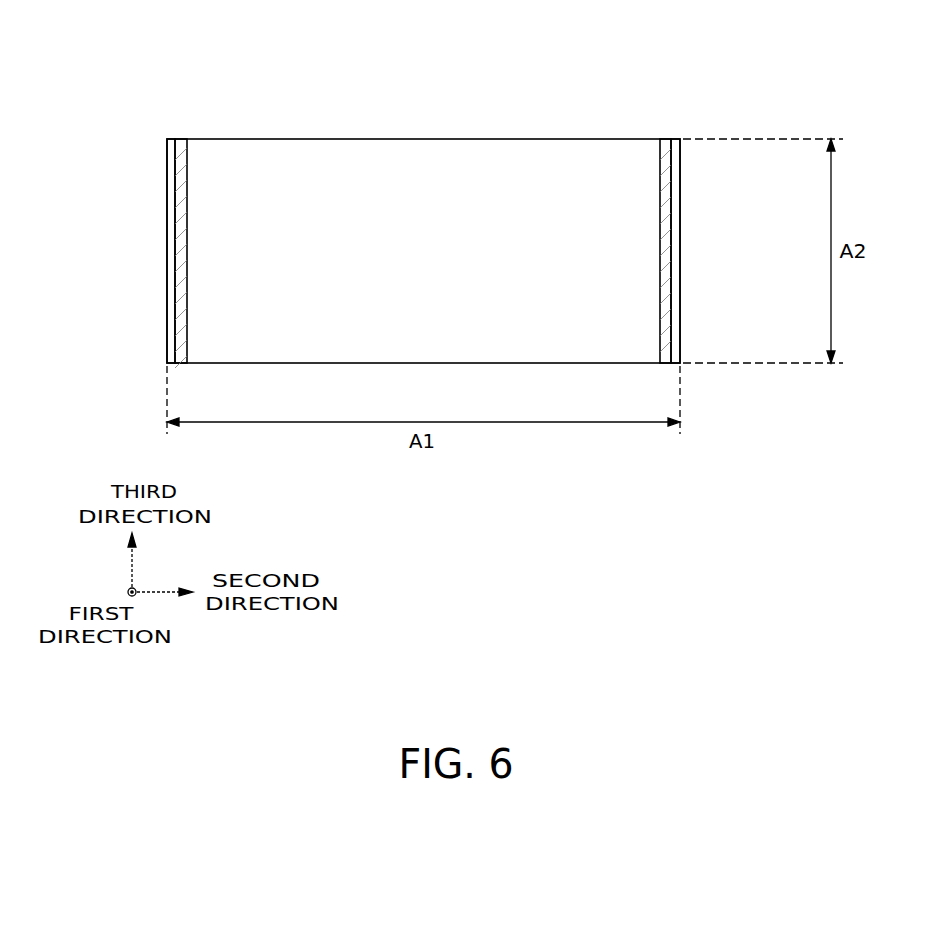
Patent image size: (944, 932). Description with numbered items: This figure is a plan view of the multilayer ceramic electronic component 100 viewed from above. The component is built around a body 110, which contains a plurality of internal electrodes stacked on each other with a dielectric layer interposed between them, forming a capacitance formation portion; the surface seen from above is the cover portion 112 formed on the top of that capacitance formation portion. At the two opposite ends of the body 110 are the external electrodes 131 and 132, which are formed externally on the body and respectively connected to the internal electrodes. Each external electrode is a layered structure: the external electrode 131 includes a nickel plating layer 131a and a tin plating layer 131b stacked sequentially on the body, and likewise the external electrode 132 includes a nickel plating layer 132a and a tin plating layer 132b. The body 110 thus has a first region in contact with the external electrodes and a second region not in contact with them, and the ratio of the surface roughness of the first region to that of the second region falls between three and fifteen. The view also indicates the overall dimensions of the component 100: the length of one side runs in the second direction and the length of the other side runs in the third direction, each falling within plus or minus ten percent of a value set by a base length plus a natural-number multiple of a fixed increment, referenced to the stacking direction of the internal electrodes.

The multilayer ceramic electronic component 100 is at (120, 34).
The body 110 is at (590, 139).
The cover portion 112 is at (346, 183).
The external electrode 131 is at (79, 205).
The nickel plating layer 131a is at (181, 249).
The tin plating layer 131b is at (169, 220).
The external electrode 132 is at (769, 205).
The nickel plating layer 132a is at (665, 243).
The tin plating layer 132b is at (673, 214).